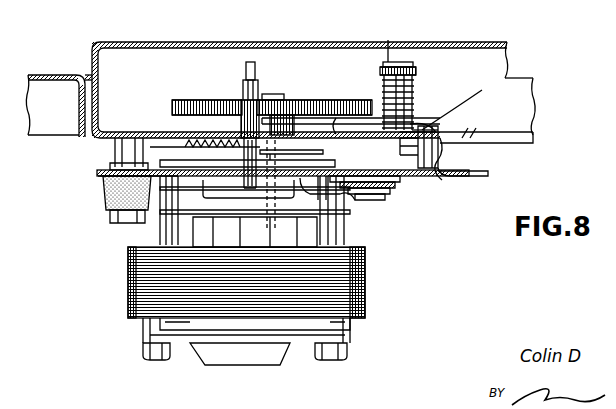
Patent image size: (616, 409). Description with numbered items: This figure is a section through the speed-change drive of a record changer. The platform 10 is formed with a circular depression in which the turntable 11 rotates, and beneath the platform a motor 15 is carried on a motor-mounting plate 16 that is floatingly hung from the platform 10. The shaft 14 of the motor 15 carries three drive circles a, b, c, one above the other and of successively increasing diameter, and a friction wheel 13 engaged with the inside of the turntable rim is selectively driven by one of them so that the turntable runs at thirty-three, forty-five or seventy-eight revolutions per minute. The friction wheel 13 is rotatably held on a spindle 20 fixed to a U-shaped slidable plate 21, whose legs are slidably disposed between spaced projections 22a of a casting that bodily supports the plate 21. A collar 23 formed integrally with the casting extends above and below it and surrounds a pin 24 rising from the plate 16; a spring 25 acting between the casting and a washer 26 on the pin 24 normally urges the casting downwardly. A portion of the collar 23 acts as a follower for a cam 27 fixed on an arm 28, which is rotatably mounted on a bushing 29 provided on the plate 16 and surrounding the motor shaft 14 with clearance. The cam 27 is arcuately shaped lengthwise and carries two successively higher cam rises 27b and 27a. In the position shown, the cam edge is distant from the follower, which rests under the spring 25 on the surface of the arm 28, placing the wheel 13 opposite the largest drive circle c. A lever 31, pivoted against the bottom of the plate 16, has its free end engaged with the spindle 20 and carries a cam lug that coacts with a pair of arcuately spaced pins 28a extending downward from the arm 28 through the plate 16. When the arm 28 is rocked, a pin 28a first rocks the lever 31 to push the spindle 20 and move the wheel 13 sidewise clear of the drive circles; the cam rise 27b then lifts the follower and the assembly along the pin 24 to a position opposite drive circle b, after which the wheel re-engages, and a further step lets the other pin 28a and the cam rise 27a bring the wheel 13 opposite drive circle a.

The platform 10 is at (50, 73).
The turntable 11 is at (142, 44).
The friction wheel 13 is at (172, 106).
The motor shaft 14 is at (244, 120).
The motor 15 is at (362, 292).
The motor-mounting plate 16 is at (97, 172).
The spindle 20 is at (286, 150).
The slidable plate 21 is at (321, 136).
The spaced projections 22a is at (406, 145).
The collar 23 is at (412, 110).
The pin 24 is at (405, 67).
The spring 25 is at (382, 94).
The washer 26 is at (398, 43).
The cam 27 is at (436, 170).
The cam rise 27a is at (455, 100).
The cam rise 27b is at (430, 180).
The arm 28 is at (340, 196).
The pins 28a is at (345, 200).
The bushing 29 is at (222, 150).
The lever 31 is at (216, 172).
The drive circle a is at (246, 72).
The drive circle b is at (243, 92).
The drive circle c is at (241, 108).